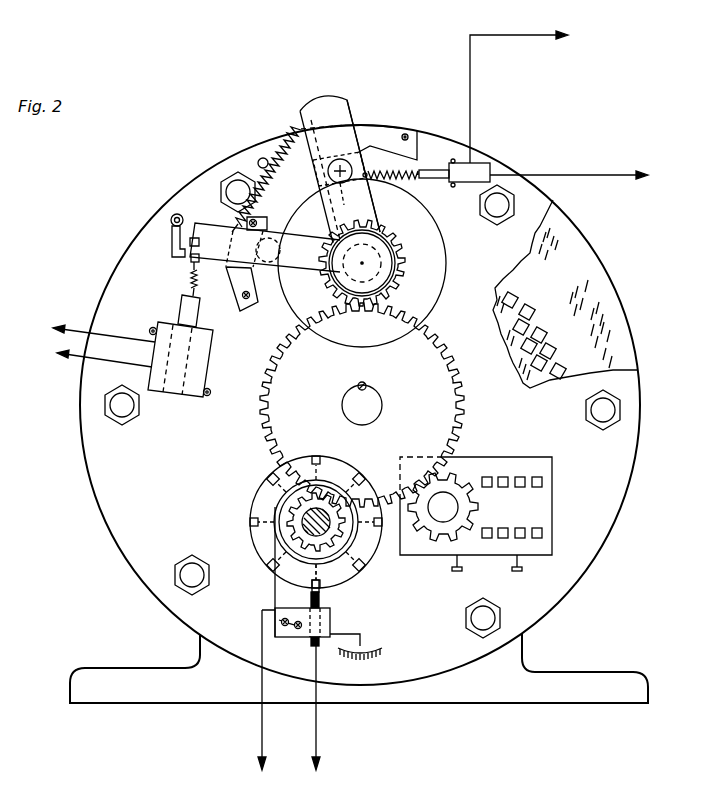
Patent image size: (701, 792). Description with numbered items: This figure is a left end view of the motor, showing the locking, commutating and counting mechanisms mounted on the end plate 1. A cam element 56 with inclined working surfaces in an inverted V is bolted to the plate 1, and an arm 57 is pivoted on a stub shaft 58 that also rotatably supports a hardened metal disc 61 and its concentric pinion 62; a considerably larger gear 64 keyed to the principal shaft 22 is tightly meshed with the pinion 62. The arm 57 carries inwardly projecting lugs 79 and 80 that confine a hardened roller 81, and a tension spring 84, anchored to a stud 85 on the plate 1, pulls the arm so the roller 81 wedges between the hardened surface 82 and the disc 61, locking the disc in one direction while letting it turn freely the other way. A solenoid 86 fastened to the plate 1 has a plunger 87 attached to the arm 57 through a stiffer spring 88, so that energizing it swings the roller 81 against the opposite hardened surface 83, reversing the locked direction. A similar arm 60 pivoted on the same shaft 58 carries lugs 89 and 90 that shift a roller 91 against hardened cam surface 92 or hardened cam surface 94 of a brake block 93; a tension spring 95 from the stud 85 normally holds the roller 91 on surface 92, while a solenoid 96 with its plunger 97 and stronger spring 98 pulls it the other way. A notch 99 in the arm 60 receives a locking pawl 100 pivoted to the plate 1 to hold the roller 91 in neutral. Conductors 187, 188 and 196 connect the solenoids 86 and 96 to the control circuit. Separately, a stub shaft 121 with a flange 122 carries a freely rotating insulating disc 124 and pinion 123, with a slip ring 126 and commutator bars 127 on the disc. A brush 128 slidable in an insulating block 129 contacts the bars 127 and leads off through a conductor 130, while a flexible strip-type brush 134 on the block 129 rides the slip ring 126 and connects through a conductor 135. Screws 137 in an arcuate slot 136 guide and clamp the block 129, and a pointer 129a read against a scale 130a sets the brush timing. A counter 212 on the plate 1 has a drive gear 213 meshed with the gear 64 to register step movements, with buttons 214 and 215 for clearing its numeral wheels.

The plate 1 is at (107, 462).
The principal shaft 22 is at (381, 396).
The cam element 56 is at (370, 128).
The arm 57 is at (331, 101).
The stub shaft 58 is at (395, 248).
The arm 60 is at (193, 259).
The hardened metal disc 61 is at (446, 262).
The pinion 62 is at (395, 278).
The gear 64 is at (268, 402).
The lug 79 is at (320, 175).
The lug 80 is at (364, 167).
The hardened roller 81 is at (344, 200).
The hardened surface 82 is at (365, 140).
The hardened surface 83 is at (383, 148).
The tension spring 84 is at (281, 145).
The pin or stud 85 is at (262, 157).
The solenoid 86 is at (480, 163).
The plunger 87 is at (431, 170).
The spring 88 is at (415, 180).
The lug 89 is at (270, 262).
The lug 90 is at (272, 238).
The roller 91 is at (278, 250).
The hardened cam surface 92 is at (263, 221).
The brake block 93 is at (238, 280).
The hardened cam surface 94 is at (252, 306).
The tension spring 95 is at (252, 190).
The solenoid 96 is at (192, 400).
The plunger 97 is at (185, 307).
The spring 98 is at (191, 283).
The notch 99 is at (199, 240).
The locking pawl 100 is at (171, 248).
The stub shaft 121 is at (325, 503).
The flange or collar 122 is at (341, 538).
The pinion 123 is at (263, 540).
The insulating disc 124 is at (260, 485).
The slip ring 126 is at (290, 498).
The commutator bars 127 is at (352, 563).
The brush 128 is at (320, 598).
The insulating block 129 is at (332, 617).
The pointer 129a is at (364, 637).
The conductor 130 is at (317, 745).
The scale 130a is at (378, 656).
The flexible strip-type brush 134 is at (272, 584).
The conductor 135 is at (262, 733).
The arcuate slot 136 is at (289, 629).
The screws 137 is at (298, 621).
The conductor 187 is at (539, 95).
The conductor 188 is at (338, 261).
The conductor 196 is at (74, 331).
The counter 212 is at (553, 494).
The drive gear 213 is at (453, 488).
The button 214 is at (470, 578).
The button 215 is at (530, 578).